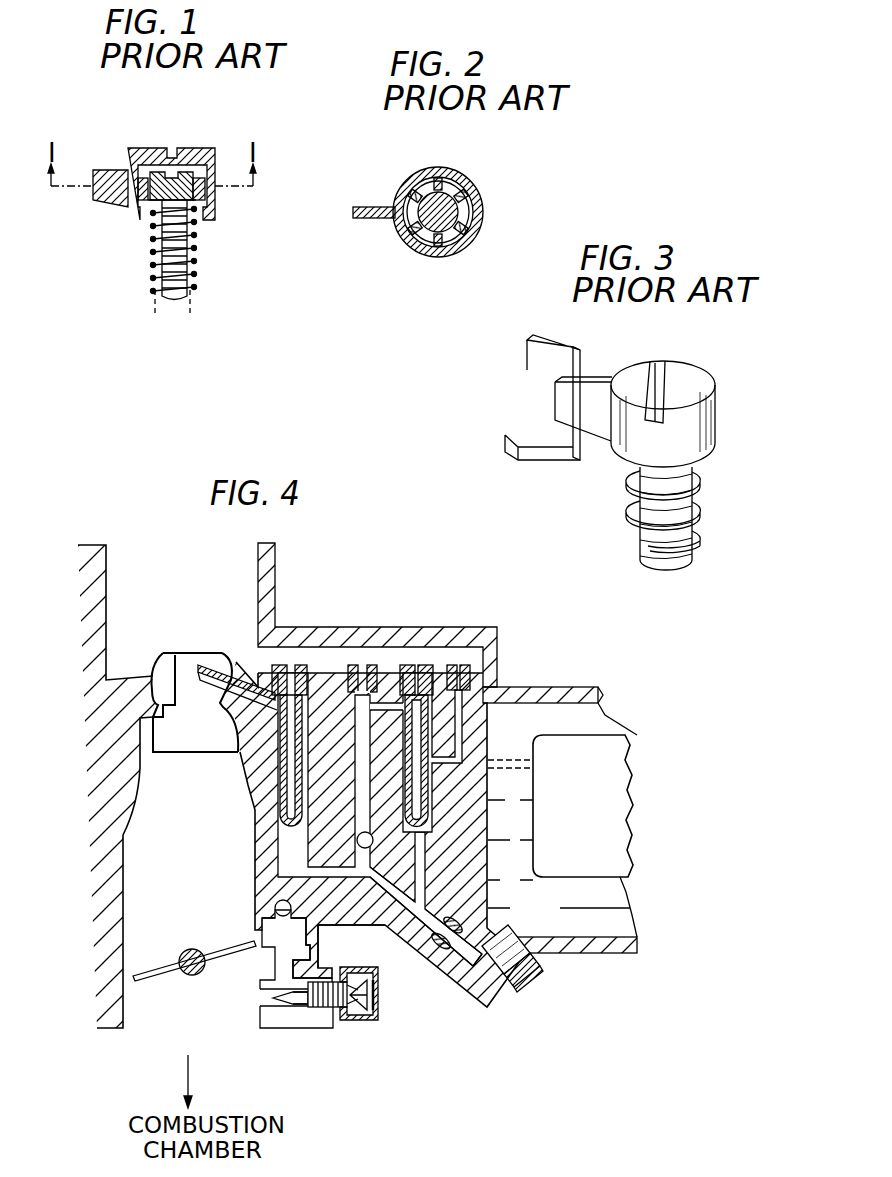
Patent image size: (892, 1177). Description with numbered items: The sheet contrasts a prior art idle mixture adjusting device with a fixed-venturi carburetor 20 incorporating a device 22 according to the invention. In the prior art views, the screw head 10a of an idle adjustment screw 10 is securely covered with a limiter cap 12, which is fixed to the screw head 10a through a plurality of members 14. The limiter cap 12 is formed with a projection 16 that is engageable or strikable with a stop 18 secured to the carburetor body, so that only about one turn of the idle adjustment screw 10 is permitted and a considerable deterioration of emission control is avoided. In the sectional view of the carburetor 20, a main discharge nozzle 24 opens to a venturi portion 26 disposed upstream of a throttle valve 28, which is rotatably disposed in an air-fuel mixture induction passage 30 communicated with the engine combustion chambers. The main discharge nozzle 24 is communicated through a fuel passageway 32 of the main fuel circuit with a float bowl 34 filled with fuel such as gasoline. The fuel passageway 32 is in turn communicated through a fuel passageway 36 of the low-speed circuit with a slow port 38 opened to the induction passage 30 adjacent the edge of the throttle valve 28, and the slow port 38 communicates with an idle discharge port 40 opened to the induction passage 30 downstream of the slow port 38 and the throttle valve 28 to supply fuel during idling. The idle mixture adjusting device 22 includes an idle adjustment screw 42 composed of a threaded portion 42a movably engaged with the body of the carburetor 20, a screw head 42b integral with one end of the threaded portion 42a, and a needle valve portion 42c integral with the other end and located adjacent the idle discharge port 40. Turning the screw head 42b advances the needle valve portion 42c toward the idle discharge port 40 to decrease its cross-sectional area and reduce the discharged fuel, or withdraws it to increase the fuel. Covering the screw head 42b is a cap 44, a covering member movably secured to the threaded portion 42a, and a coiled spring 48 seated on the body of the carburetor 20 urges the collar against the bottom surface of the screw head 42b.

In FIG. 1, the idle adjustment screw 10 is at (160, 263).
In FIG. 3, the idle adjustment screw 10 is at (640, 543).
In FIG. 1, the screw head 10a is at (190, 172).
In FIG. 2, the screw head 10a is at (413, 250).
In FIG. 1, the limiter cap 12 is at (144, 150).
In FIG. 2, the limiter cap 12 is at (454, 180).
In FIG. 3, the limiter cap 12 is at (688, 370).
In FIG. 1, the members 14 is at (212, 185).
In FIG. 2, the members 14 is at (484, 216).
In FIG. 1, the projection 16 is at (110, 192).
In FIG. 2, the projection 16 is at (368, 219).
In FIG. 3, the projection 16 is at (597, 425).
In FIG. 3, the stop 18 is at (530, 352).
In FIG. 4, the fixed-venturi carburetor 20 is at (366, 614).
In FIG. 4, the idle mixture adjusting device 22 is at (324, 1025).
In FIG. 4, the main discharge nozzle 24 is at (203, 664).
In FIG. 4, the venturi portion 26 is at (167, 748).
In FIG. 4, the throttle valve 28 is at (157, 967).
In FIG. 4, the air-fuel mixture induction passage 30 is at (212, 819).
In FIG. 4, the fuel passageway 32 is at (398, 893).
In FIG. 4, the float bowl 34 is at (543, 715).
In FIG. 4, the fuel passageway 36 is at (275, 903).
In FIG. 4, the slow port 38 is at (262, 938).
In FIG. 4, the idle discharge port 40 is at (280, 1000).
In FIG. 4, the idle adjustment screw 42 is at (318, 1010).
In FIG. 4, the threaded portion 42a is at (334, 1020).
In FIG. 4, the screw head 42b is at (372, 1003).
In FIG. 4, the needle valve portion 42c is at (280, 1014).
In FIG. 4, the cap 44 is at (362, 1013).
In FIG. 4, the coiled spring 48 is at (337, 975).